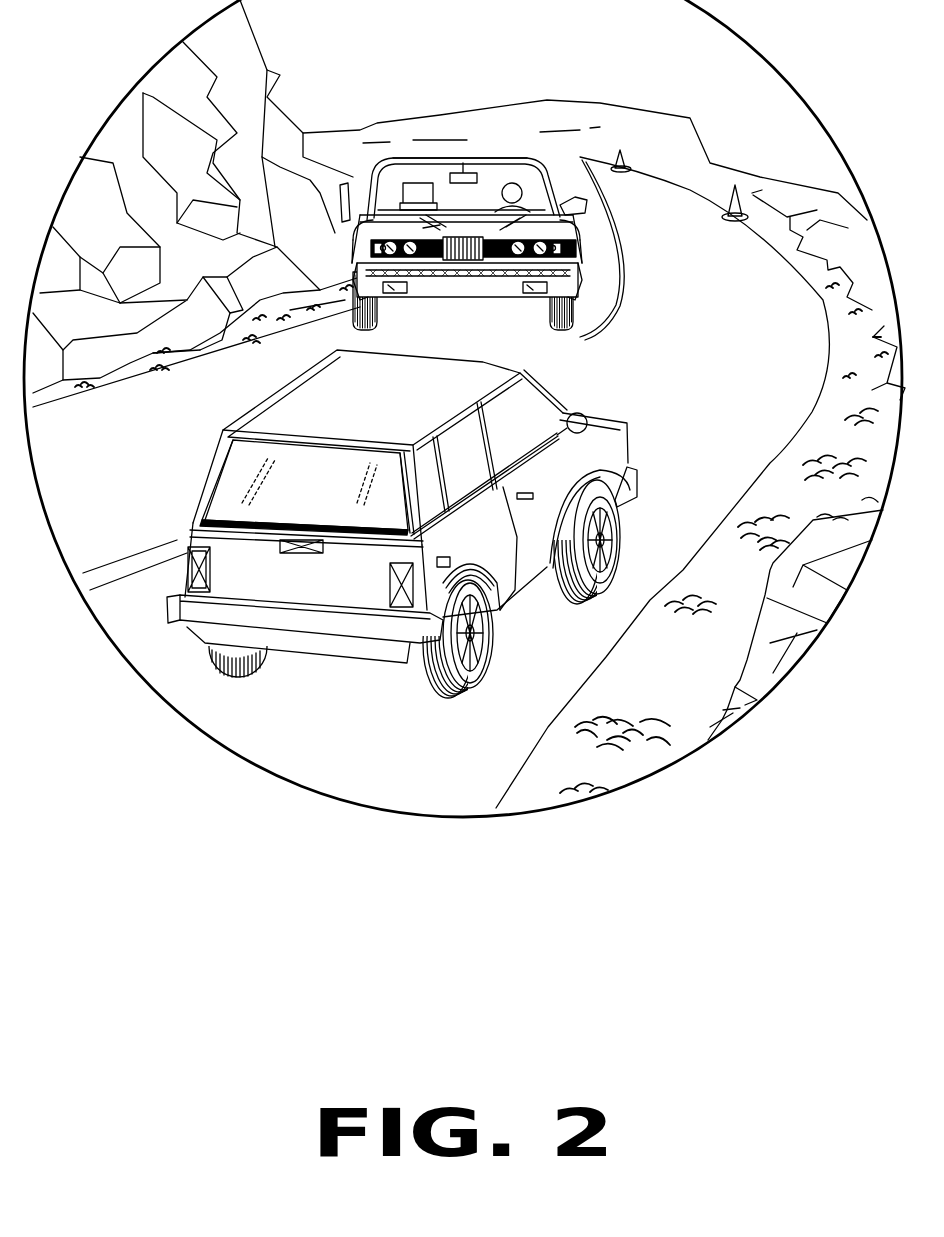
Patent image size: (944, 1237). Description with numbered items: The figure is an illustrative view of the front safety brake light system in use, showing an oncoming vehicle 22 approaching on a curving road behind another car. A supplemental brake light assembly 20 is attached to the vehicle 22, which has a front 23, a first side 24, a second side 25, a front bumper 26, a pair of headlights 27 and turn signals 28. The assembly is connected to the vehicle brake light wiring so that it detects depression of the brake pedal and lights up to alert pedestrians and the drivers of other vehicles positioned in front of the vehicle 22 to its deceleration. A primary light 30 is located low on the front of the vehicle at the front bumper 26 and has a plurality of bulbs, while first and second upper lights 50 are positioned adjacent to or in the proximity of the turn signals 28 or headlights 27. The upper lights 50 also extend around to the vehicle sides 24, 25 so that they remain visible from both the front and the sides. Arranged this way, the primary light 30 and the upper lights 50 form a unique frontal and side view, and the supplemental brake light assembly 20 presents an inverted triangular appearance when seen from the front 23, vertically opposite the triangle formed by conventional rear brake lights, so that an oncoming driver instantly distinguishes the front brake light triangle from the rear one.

The supplemental brake light assembly 20 is at (510, 302).
The vehicle 22 is at (520, 175).
The front 23 is at (423, 233).
The first side 24 is at (335, 243).
The second side 25 is at (587, 205).
The front bumper 26 is at (463, 287).
The headlights 27 is at (520, 240).
The turn signals 28 is at (313, 270).
The primary light 30 is at (478, 272).
The upper lights 50 is at (380, 246).